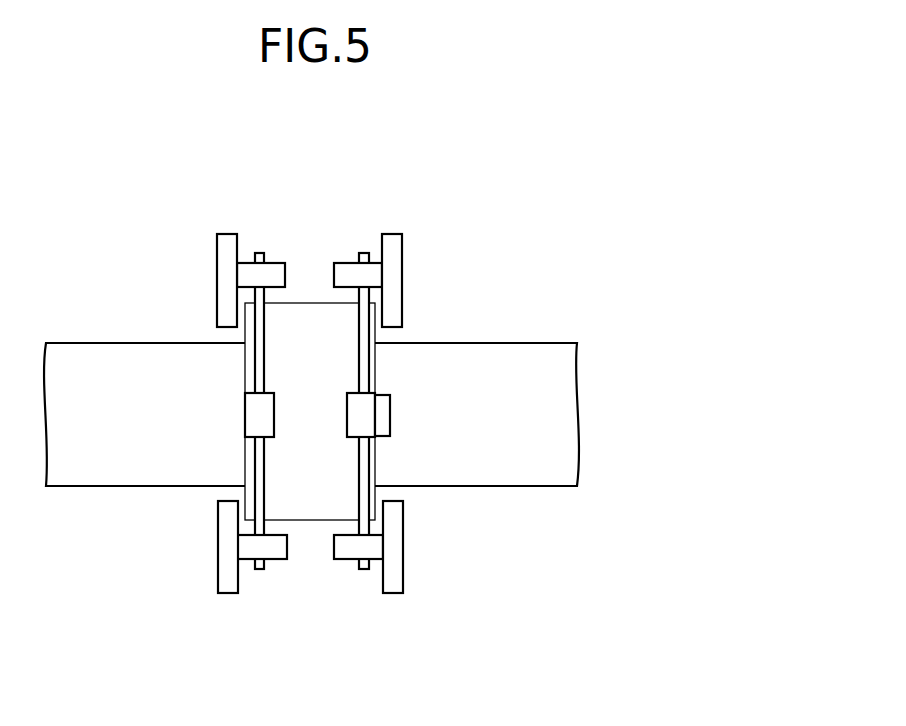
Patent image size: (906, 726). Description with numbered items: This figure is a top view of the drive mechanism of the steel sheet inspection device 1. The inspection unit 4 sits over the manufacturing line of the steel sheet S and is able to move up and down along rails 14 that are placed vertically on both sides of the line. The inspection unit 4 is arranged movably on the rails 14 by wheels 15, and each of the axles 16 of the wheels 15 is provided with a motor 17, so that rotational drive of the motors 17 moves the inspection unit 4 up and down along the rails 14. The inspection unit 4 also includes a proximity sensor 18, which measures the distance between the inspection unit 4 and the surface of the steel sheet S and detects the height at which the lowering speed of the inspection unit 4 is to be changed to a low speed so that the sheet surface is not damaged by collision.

The steel sheet inspection device 1 is at (313, 394).
The inspection unit 4 is at (306, 302).
The rails 14 is at (228, 234).
The wheels 15 is at (272, 262).
The axles 16 is at (357, 329).
The motor 17 is at (347, 426).
The proximity sensor 18 is at (392, 414).
The steel sheet S is at (503, 342).